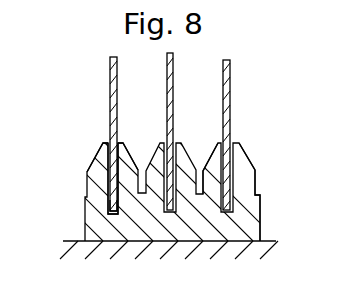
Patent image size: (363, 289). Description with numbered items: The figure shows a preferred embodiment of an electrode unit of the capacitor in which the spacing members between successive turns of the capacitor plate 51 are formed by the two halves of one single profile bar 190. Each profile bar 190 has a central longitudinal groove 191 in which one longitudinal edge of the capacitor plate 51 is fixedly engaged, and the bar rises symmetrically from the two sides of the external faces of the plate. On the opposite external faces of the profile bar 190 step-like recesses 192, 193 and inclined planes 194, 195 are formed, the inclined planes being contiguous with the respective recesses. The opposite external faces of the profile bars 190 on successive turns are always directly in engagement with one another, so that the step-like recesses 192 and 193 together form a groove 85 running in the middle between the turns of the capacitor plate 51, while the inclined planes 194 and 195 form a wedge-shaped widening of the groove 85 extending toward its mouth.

The capacitor plate 51 is at (165, 99).
The groove 85 is at (197, 153).
The profile bar 190 is at (97, 219).
The central longitudinal groove 191 is at (109, 201).
The step-like recess 192 is at (107, 206).
The step-like recess 193 is at (254, 188).
The inclined plane 194 is at (94, 161).
The inclined plane 195 is at (246, 153).